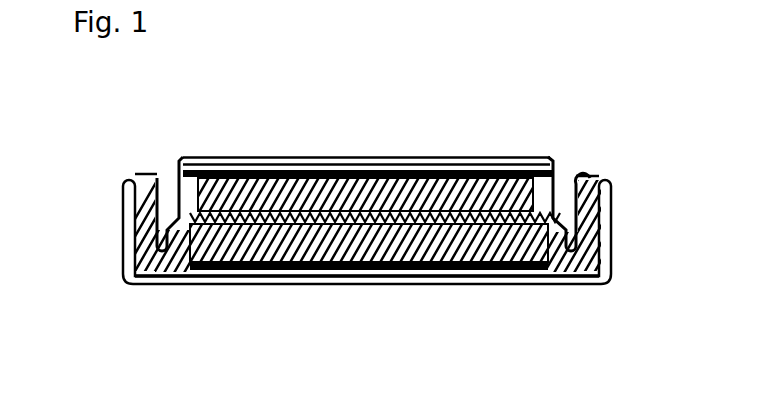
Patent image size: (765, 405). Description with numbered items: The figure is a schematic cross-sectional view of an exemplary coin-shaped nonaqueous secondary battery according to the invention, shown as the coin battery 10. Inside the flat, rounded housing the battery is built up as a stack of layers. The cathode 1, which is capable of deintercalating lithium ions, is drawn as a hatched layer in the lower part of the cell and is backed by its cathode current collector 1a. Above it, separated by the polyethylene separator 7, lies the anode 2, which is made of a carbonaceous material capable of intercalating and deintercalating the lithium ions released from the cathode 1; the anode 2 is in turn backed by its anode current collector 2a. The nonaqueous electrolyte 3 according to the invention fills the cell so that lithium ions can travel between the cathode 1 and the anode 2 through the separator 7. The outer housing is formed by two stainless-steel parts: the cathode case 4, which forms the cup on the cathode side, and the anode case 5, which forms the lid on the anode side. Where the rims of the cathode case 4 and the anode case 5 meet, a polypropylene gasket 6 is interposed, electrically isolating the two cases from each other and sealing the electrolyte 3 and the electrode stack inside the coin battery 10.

The coin battery 10 is at (444, 130).
The cathode 1 is at (313, 277).
The cathode current collector 1a is at (242, 273).
The anode 2 is at (407, 160).
The anode current collector 2a is at (300, 162).
The nonaqueous electrolyte 3 is at (182, 160).
The cathode case 4 is at (425, 268).
The anode case 5 is at (512, 163).
The gasket 6 is at (143, 280).
The separator 7 is at (469, 222).